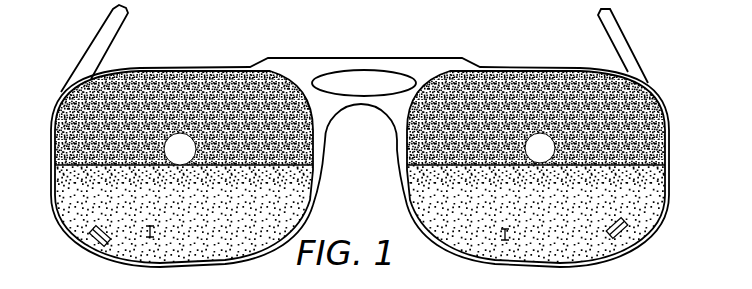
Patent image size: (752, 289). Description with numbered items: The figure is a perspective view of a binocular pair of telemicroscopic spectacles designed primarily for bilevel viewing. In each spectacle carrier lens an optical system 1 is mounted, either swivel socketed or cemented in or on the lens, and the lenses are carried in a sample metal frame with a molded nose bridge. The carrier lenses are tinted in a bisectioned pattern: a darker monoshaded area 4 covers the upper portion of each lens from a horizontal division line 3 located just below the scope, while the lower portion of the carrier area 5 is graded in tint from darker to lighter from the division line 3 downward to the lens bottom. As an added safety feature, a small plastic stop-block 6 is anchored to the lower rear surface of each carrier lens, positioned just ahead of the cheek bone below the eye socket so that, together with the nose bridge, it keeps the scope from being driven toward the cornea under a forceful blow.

The optical system 1 is at (171, 136).
The division line 3 is at (661, 163).
The darker monoshaded area 4 is at (226, 82).
The lower portion of the carrier area 5 is at (412, 196).
The stop-block 6 is at (627, 224).